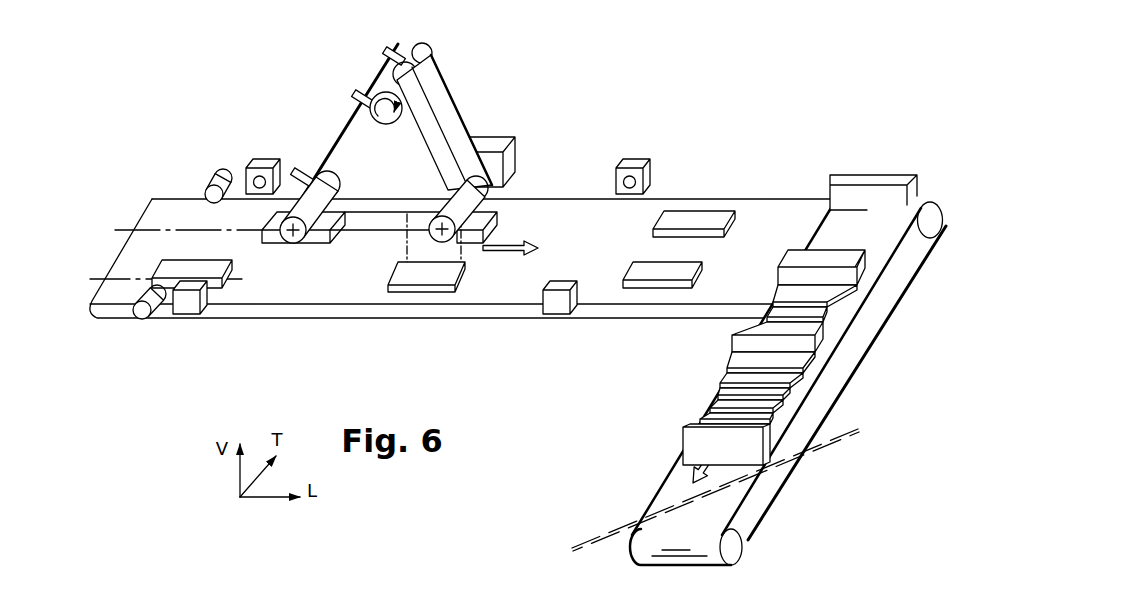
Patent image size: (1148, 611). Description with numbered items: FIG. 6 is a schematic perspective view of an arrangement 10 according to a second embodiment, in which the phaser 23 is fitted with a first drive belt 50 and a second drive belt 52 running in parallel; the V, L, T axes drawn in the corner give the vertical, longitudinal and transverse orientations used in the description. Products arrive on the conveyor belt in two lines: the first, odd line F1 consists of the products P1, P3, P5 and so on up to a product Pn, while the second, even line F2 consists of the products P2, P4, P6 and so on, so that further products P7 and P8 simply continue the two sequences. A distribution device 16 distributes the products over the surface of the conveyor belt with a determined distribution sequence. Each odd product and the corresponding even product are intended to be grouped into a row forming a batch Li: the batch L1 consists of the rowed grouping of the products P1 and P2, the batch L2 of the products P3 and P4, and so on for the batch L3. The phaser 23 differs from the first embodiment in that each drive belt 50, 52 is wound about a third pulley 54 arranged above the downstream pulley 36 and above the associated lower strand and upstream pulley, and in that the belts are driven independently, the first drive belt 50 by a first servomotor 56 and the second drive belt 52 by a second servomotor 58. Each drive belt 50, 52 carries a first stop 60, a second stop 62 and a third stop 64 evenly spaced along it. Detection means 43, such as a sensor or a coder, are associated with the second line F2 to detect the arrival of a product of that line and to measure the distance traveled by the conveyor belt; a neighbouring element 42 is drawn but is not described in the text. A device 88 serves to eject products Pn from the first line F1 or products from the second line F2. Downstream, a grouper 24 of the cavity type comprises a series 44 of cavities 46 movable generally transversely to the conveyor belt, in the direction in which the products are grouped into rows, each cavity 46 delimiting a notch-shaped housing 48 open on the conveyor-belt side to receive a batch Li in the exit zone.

The arrangement 10 is at (673, 91).
The distribution device 16 is at (162, 324).
The phaser 23 is at (399, 198).
The grouper 24 is at (759, 347).
The downstream pulley 36 is at (399, 290).
The roller 42 is at (218, 166).
The detection means 43 is at (142, 317).
The series of cavities 44 is at (831, 293).
The cavity 46 is at (904, 254).
The housing 48 is at (847, 190).
The first drive belt 50 is at (431, 198).
The second drive belt 52 is at (438, 126).
The third pulley 54 is at (398, 130).
The first servomotor 56 is at (508, 133).
The second servomotor 58 is at (459, 315).
The first stop 60 is at (302, 166).
The second stop 62 is at (454, 178).
The third stop 64 is at (386, 48).
The ejecting device 88 is at (255, 159).
The product P1 is at (742, 372).
The product P2 is at (700, 430).
The product P3 is at (797, 330).
The product P4 is at (831, 374).
The product P5 is at (713, 220).
The product P6 is at (650, 270).
The plate P7 is at (490, 222).
The plate P8 is at (462, 272).
The product Pn is at (185, 214).
The batch L1 is at (699, 383).
The batch L2 is at (758, 282).
The line L3 is at (697, 186).
The batch Li is at (663, 159).
The first line F1 is at (158, 224).
The second line F2 is at (127, 274).